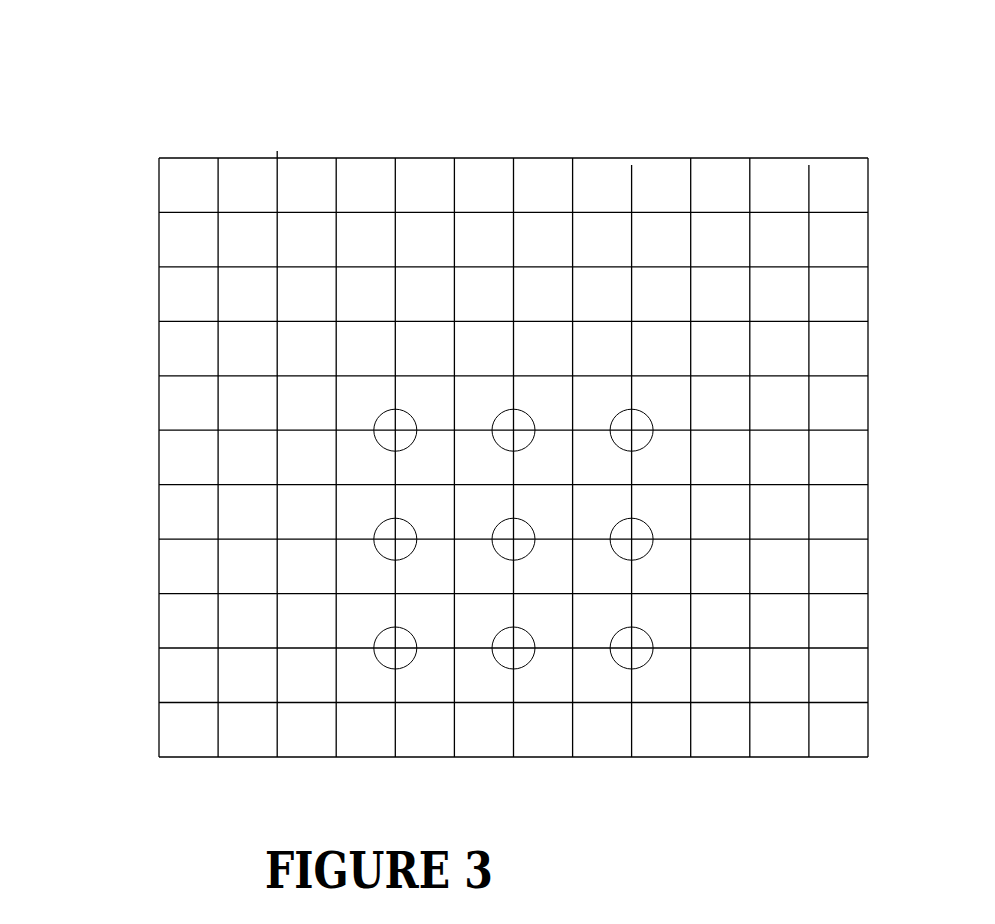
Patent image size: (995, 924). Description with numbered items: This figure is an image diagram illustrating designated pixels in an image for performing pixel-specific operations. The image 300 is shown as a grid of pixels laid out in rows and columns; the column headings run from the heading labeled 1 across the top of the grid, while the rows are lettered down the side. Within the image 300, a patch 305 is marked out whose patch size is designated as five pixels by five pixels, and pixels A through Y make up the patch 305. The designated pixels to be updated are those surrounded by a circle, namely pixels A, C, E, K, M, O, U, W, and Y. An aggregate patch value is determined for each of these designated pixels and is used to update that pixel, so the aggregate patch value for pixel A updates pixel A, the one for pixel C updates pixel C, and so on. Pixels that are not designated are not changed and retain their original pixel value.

The image 300 is at (190, 92).
The patch 305 is at (370, 512).
The grid column 1 is at (159, 438).